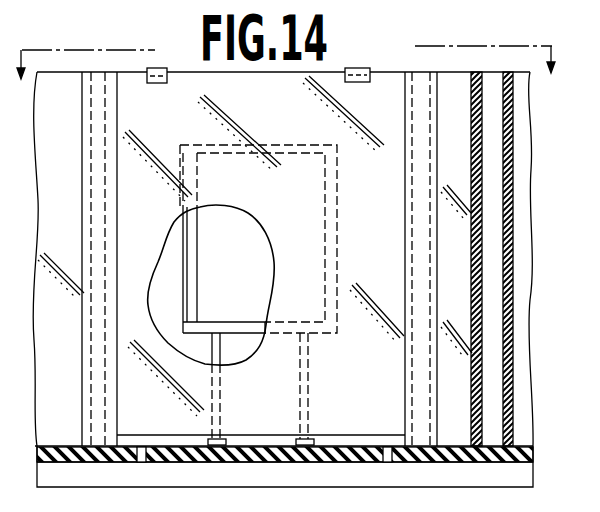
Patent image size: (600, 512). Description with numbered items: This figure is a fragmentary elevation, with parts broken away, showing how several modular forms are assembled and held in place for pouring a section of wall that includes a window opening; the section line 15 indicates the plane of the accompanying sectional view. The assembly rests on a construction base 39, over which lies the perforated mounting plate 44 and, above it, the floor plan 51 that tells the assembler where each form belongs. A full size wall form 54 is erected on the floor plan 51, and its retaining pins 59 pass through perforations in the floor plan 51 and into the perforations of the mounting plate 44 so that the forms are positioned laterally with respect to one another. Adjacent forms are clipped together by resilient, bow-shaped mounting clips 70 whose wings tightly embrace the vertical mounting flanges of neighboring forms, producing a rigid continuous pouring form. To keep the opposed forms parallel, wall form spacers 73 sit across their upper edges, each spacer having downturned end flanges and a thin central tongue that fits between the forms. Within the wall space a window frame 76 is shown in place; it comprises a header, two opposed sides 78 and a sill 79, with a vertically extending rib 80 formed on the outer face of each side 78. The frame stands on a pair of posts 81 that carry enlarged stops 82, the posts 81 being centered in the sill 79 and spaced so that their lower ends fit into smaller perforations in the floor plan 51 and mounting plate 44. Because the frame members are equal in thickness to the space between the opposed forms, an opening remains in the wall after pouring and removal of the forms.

The section line 15- 15 is at (286, 53).
The construction base 39 is at (540, 472).
The perforated mounting plate 44 is at (536, 453).
The floor plan 51 is at (436, 446).
The full size wall form 54 is at (314, 78).
The retaining pin 59 is at (141, 462).
The mounting clip 70 is at (117, 175).
The wall form spacer 73 is at (147, 70).
The window frame 76 is at (203, 280).
The side 78 is at (198, 246).
The sill 79 is at (222, 322).
The vertically extending rib 80 is at (178, 277).
The post 81 is at (221, 355).
The enlarged stop 82 is at (296, 440).